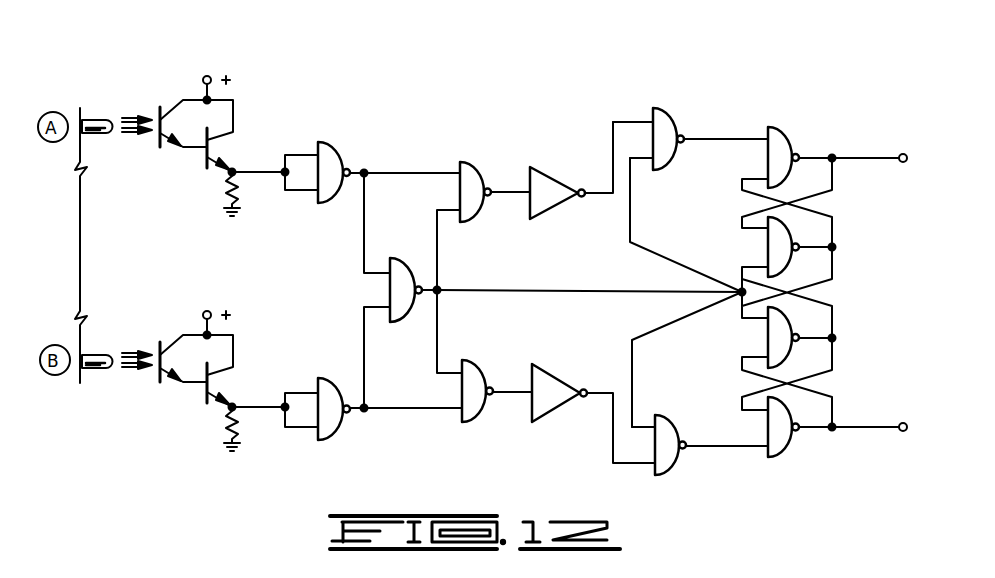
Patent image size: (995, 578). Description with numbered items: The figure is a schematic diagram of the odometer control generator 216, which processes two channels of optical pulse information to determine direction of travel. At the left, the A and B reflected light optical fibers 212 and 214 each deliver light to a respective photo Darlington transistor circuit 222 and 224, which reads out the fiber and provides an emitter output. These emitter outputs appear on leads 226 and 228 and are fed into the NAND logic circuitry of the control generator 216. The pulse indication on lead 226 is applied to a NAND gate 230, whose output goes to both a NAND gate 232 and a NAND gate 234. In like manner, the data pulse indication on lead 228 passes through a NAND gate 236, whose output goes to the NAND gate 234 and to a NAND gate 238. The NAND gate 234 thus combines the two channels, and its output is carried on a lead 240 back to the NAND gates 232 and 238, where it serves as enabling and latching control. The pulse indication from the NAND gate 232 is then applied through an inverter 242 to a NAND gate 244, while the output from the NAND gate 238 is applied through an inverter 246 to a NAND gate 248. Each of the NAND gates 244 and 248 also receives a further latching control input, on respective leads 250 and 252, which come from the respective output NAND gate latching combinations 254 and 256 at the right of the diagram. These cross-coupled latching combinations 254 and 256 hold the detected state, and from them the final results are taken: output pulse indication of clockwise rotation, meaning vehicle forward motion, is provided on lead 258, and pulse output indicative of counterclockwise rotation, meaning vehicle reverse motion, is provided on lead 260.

The A reflected light optical fiber 212 is at (95, 119).
The B reflected light optical fiber 214 is at (88, 369).
The control generator 216 is at (578, 82).
The photo Darlington transistor circuit 222 is at (238, 102).
The photo Darlington transistor circuit 224 is at (231, 377).
The lead 226 is at (253, 169).
The lead 228 is at (253, 411).
The NAND gate 230 is at (336, 148).
The NAND gate 232 is at (487, 145).
The NAND gate 234 is at (420, 238).
The NAND gate 236 is at (338, 429).
The NAND gate 238 is at (472, 418).
The lead 240 is at (517, 290).
The inverter 242 is at (565, 150).
The NAND gate 244 is at (668, 108).
The inverter 246 is at (547, 419).
The NAND gate 248 is at (675, 465).
The lead 250 is at (660, 254).
The lead 252 is at (668, 332).
The output NAND gate latching combination 254 is at (823, 205).
The output NAND gate latching combination 256 is at (823, 384).
The lead 258 is at (872, 153).
The lead 260 is at (848, 430).